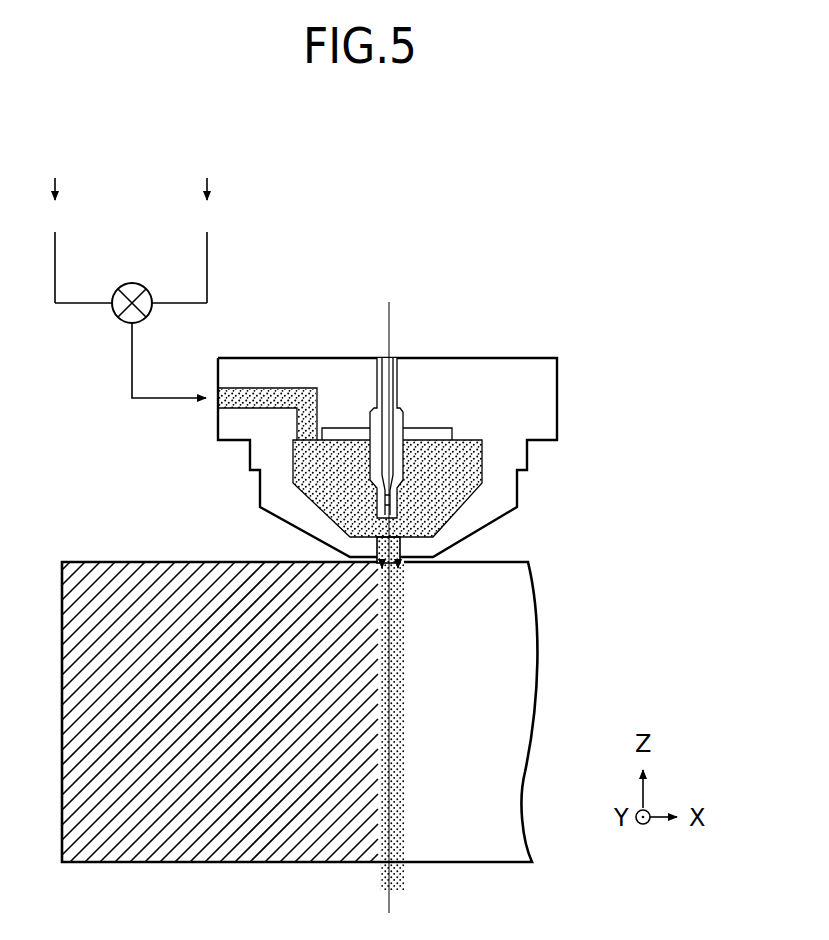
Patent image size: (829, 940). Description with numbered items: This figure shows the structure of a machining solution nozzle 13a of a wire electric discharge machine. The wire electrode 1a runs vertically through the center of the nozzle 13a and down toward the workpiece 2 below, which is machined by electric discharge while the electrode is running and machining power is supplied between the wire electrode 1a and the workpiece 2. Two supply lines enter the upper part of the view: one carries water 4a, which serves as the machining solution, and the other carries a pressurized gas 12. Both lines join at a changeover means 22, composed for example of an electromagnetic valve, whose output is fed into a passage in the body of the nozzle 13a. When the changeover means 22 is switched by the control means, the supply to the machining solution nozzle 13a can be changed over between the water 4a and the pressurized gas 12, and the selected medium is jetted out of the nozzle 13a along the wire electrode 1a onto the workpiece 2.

The wire electrode 1a is at (389, 316).
The workpiece 2 is at (367, 677).
The water 4a is at (562, 602).
The pressurized gas 12 is at (209, 224).
The machining solution nozzle 13a is at (507, 490).
The changeover means 22 is at (132, 283).